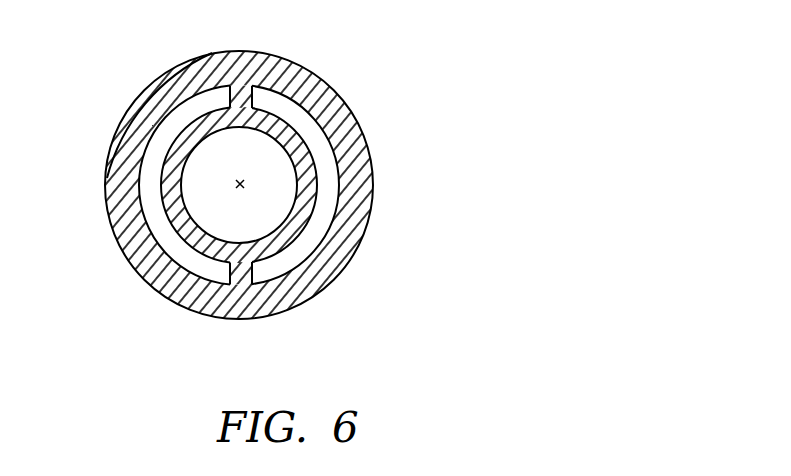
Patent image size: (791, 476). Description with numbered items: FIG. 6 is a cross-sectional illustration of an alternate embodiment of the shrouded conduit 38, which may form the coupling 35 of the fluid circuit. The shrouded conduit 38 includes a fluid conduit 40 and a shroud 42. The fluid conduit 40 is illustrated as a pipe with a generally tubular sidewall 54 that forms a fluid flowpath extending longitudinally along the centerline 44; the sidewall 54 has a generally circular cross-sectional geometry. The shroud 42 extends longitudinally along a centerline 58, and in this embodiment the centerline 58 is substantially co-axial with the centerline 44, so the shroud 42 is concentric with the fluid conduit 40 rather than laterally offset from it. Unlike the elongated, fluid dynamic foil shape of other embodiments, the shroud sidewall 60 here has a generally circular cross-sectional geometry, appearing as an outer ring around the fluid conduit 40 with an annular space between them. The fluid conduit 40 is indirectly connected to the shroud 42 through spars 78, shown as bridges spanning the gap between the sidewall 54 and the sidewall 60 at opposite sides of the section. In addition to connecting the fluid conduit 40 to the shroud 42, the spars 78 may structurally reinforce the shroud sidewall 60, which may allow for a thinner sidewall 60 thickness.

The coupling 35 is at (310, 159).
The shrouded conduit 38 is at (310, 159).
The fluid conduit 40 is at (149, 169).
The shroud 42 is at (278, 159).
The centerline 44 is at (211, 245).
The sidewall 54 is at (183, 220).
The centerline 58 is at (237, 185).
The sidewall 60 is at (360, 185).
The spar 78 is at (240, 97).